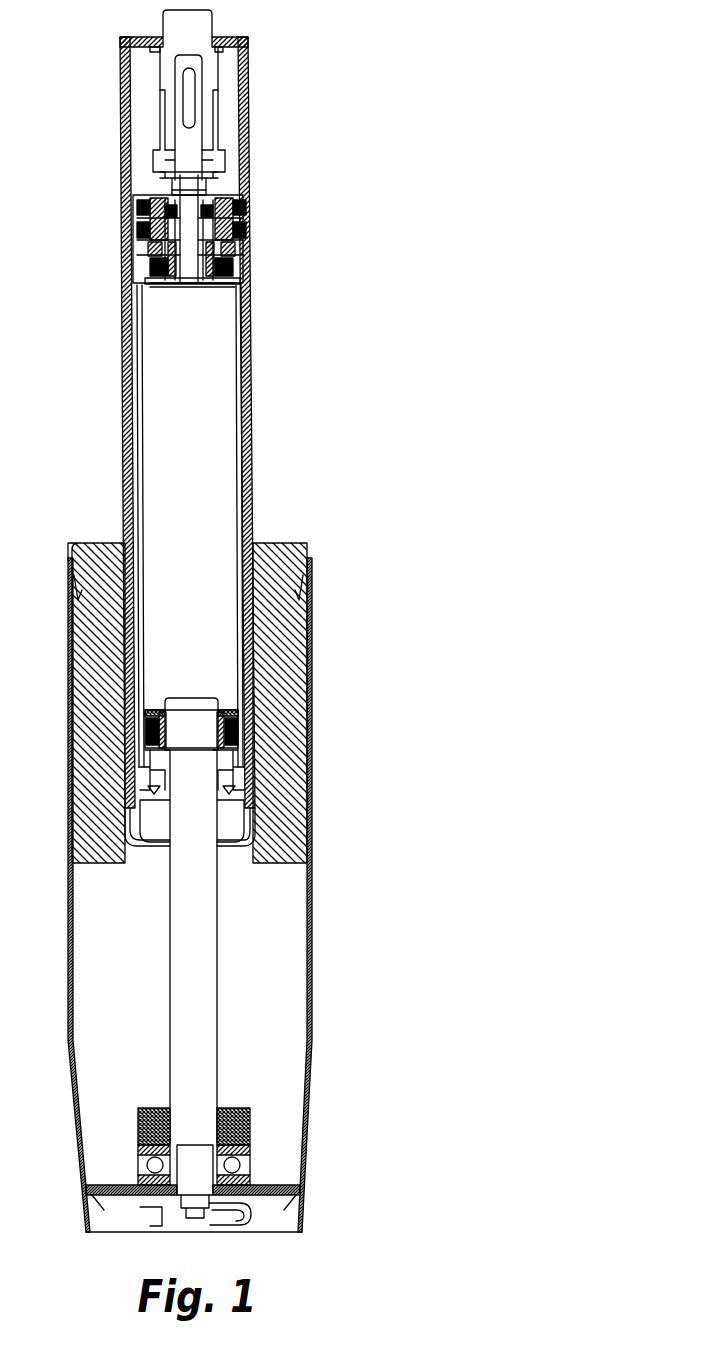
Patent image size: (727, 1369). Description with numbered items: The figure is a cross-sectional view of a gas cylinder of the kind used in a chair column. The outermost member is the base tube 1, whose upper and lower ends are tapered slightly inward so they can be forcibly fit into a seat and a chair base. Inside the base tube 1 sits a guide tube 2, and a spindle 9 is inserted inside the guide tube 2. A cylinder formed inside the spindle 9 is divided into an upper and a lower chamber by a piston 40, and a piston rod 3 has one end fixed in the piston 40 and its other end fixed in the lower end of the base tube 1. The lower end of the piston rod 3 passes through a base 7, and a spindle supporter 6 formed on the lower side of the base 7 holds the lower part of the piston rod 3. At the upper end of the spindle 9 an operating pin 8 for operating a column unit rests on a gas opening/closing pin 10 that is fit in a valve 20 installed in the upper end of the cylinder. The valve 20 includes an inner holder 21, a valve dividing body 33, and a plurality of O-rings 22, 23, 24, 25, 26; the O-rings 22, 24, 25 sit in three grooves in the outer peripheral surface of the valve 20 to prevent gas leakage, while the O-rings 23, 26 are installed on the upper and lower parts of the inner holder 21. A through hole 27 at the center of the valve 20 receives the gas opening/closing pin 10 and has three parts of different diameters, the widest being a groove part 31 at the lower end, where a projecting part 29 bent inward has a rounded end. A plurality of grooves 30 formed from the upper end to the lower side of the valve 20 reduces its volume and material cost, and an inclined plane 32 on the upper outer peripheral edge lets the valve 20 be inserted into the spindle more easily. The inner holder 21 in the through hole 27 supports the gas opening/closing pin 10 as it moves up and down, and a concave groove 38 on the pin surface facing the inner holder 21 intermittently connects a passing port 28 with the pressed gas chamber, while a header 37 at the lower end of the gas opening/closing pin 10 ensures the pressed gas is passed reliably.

The base tube 1 is at (313, 830).
The guide tube 2 is at (102, 553).
The piston rod 3 is at (198, 923).
The spindle supporter 6 is at (303, 1188).
The base 7 is at (253, 1148).
The operating pin 8 is at (193, 148).
The spindle 9 is at (257, 425).
The gas opening/closing pin 10 is at (208, 160).
The valve 20 is at (238, 248).
The inner holder 21 is at (150, 234).
The O-ring 22 is at (240, 210).
The O-ring 23 is at (222, 182).
The O-ring 24 is at (240, 225).
The O-ring 25 is at (238, 270).
The O-ring 26 is at (207, 284).
The through hole 27 is at (185, 185).
The passing port 28 is at (150, 250).
The projecting part 29 is at (162, 288).
The grooves 30 is at (135, 190).
The groove part 31 is at (135, 292).
The inclined plane 32 is at (250, 192).
The valve dividing body 33 is at (244, 281).
The header 37 is at (182, 285).
The concave groove 38 is at (135, 218).
The piston 40 is at (278, 738).